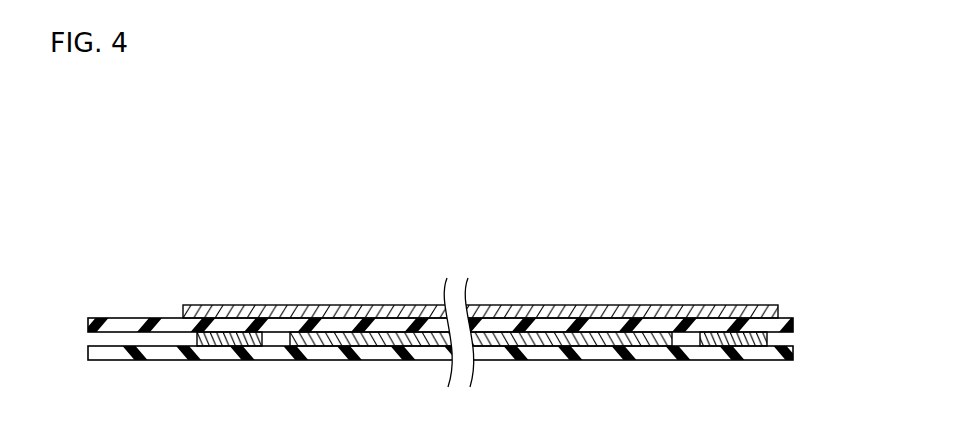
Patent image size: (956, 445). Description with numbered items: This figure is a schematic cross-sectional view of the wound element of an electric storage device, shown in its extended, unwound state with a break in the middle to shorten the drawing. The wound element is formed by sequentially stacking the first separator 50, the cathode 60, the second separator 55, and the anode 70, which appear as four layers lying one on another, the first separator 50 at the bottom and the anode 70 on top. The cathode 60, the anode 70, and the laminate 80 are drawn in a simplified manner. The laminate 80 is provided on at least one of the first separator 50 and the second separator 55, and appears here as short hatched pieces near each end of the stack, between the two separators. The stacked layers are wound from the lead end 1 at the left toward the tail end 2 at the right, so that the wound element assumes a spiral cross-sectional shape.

The lead end 1 is at (44, 334).
The tail end 2 is at (832, 340).
The first separator 50 is at (152, 361).
The second separator 55 is at (148, 318).
The cathode 60 is at (380, 346).
The anode 70 is at (322, 310).
The laminate 80 is at (227, 346).